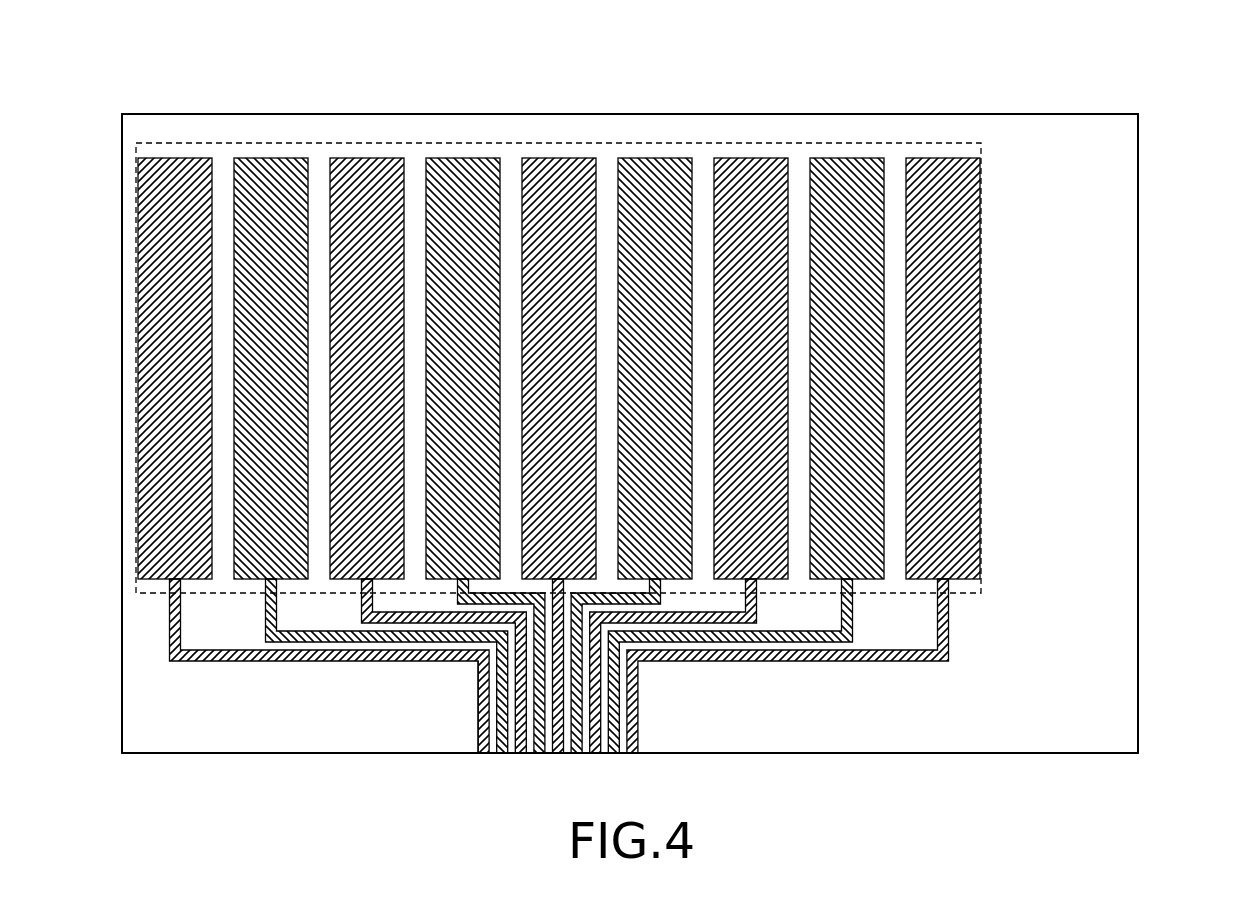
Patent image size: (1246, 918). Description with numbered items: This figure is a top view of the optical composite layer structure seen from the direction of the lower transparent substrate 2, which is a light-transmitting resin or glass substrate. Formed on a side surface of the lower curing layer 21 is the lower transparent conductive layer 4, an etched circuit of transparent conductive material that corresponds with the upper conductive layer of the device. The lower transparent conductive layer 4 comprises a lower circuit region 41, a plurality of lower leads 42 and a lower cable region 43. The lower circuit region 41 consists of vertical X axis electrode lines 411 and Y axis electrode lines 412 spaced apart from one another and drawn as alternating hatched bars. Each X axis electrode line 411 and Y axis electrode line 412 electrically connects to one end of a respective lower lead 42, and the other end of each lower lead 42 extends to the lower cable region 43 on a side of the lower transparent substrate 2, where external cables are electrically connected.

The lower transparent substrate 2 is at (1087, 113).
The lower curing layer 21 is at (1123, 149).
The lower transparent conductive layer 4 is at (549, 413).
The lower circuit region 41 is at (861, 143).
The X axis electrode line 411 is at (170, 178).
The Y axis electrode line 412 is at (266, 178).
The lower lead 42 is at (872, 663).
The lower cable region 43 is at (476, 703).